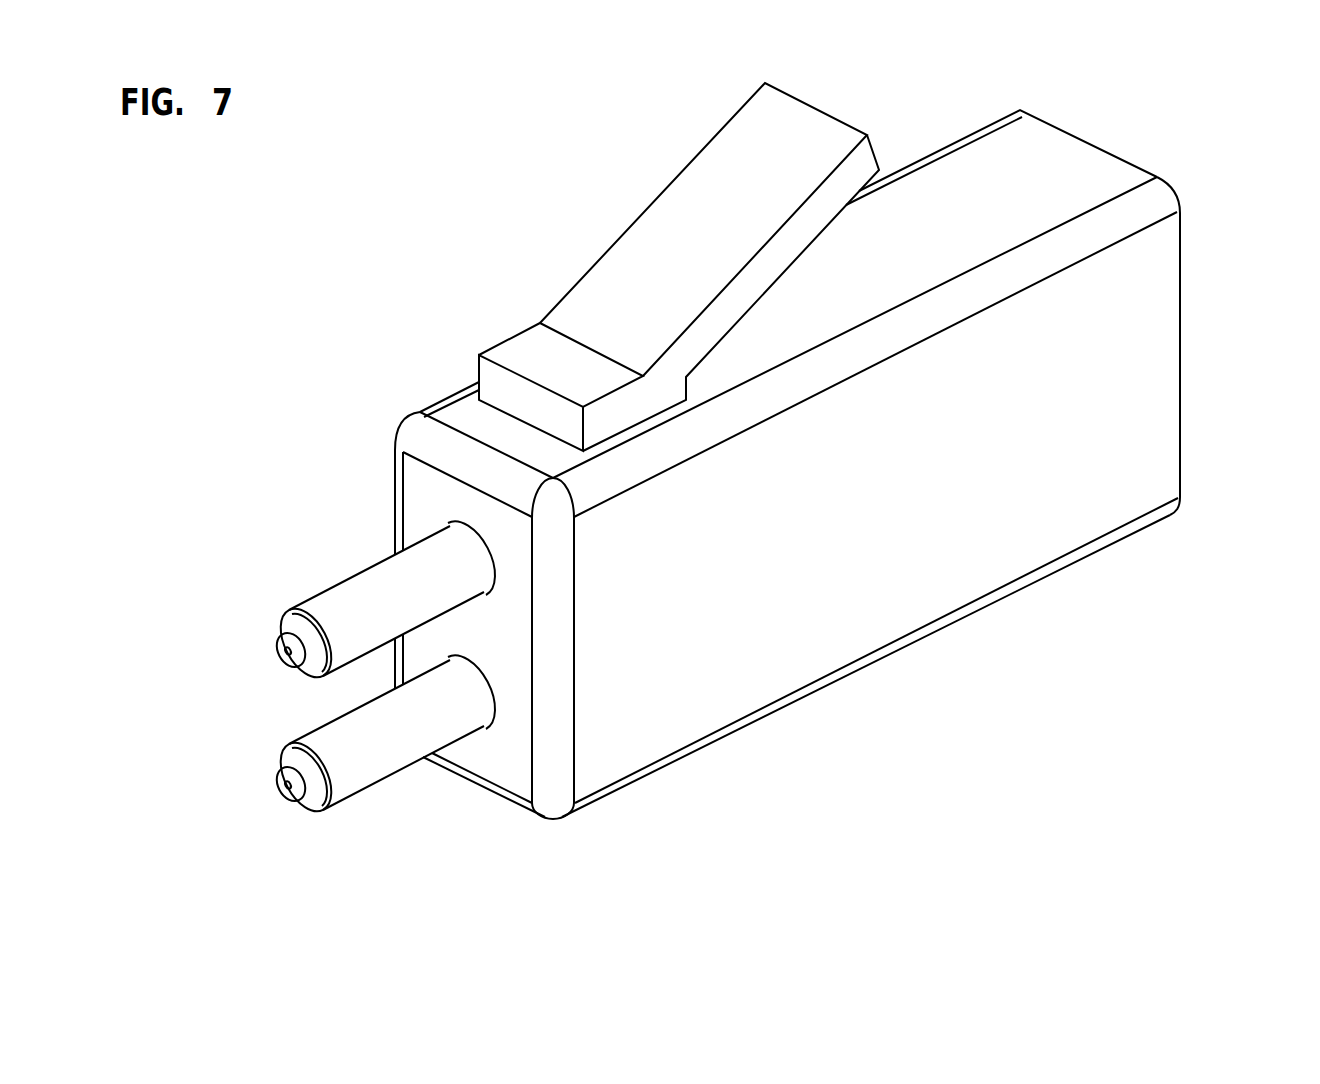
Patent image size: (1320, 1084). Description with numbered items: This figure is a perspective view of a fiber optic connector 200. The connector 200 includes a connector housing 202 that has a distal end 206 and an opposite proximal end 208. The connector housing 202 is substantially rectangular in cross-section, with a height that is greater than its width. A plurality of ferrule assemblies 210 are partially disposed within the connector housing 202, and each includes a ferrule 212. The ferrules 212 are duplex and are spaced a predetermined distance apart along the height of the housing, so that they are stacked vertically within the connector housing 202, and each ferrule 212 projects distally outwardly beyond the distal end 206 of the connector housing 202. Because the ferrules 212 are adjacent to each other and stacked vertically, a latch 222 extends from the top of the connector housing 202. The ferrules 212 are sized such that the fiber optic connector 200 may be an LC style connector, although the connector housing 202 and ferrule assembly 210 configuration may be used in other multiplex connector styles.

The fiber optic connector 200 is at (312, 297).
The connector housing 202 is at (870, 668).
The distal end 206 is at (518, 808).
The proximal end 208 is at (1180, 465).
The ferrule assemblies 210 is at (366, 802).
The ferrule 212 is at (290, 610).
The latch 222 is at (688, 162).